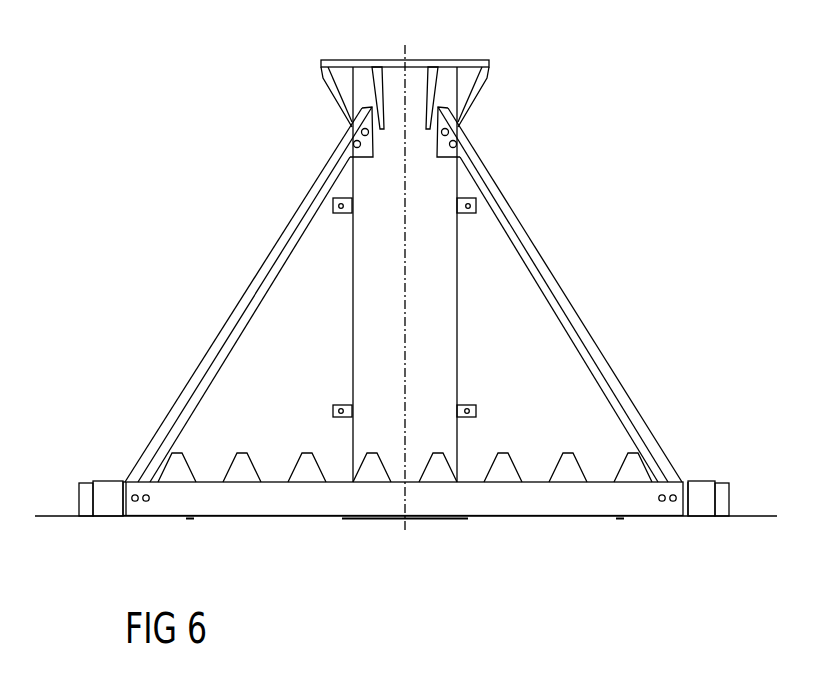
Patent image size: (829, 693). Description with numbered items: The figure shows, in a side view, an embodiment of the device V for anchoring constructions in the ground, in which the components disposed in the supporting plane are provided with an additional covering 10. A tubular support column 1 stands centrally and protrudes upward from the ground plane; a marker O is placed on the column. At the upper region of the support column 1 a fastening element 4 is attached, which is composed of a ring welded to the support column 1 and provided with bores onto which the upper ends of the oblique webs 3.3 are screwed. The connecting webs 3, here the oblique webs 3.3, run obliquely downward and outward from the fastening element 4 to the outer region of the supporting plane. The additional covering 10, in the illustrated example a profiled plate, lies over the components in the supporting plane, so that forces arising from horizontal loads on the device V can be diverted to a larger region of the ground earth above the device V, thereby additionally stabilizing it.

The support column 1 is at (458, 342).
The connecting webs 3 is at (566, 294).
The oblique webs 3.3 is at (582, 333).
The fastening element 4 is at (467, 86).
The additional covering 10 is at (636, 458).
The device for anchoring constructions in the ground V is at (262, 110).
The column axis marker O is at (443, 225).